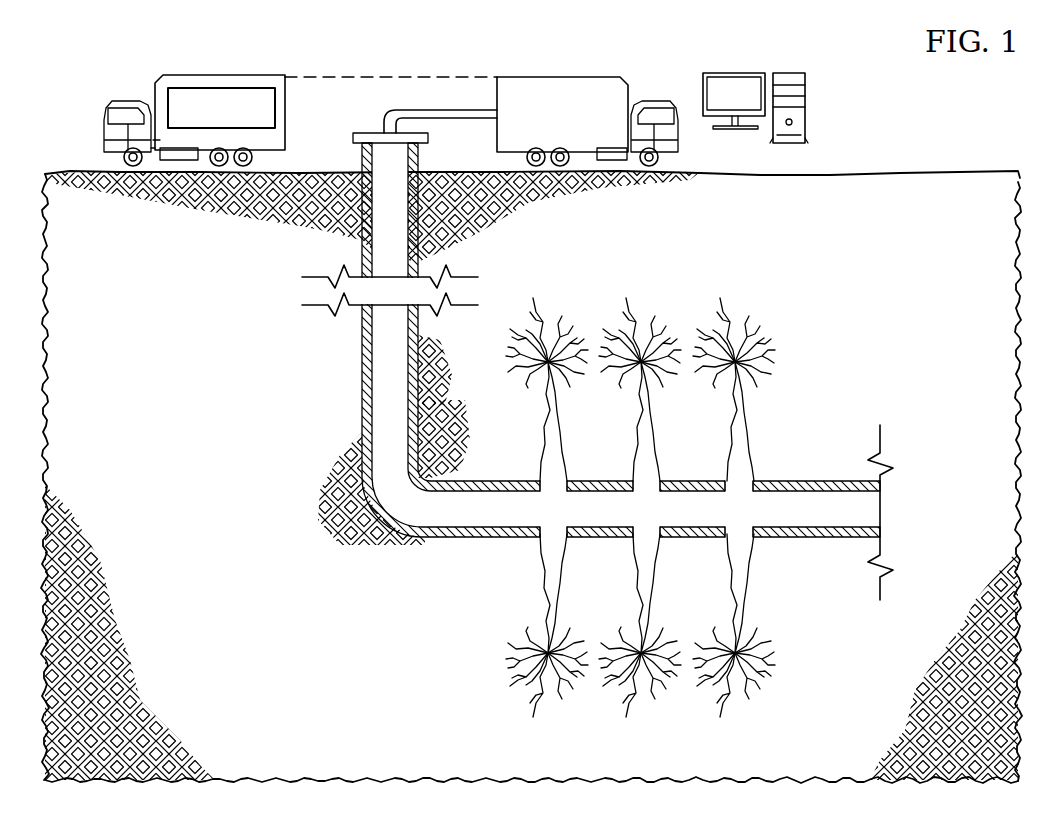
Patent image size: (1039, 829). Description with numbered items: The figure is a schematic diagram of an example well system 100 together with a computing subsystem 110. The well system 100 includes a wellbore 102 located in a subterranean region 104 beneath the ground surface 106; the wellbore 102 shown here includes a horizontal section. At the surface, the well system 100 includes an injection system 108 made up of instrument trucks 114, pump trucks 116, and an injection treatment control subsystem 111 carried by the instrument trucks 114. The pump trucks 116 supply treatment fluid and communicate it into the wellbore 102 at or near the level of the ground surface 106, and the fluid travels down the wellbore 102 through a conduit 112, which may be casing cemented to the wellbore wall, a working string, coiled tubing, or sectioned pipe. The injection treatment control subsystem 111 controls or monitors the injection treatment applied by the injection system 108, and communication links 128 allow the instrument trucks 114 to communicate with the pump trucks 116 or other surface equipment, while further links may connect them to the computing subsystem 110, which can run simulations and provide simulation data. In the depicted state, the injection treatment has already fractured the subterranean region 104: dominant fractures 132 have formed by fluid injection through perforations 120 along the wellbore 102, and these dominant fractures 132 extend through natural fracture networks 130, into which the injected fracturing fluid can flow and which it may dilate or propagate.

The well system 100 is at (244, 581).
The wellbore 102 is at (468, 545).
The subterranean region 104 is at (536, 252).
The ground surface 106 is at (838, 175).
The injection system 108 is at (79, 73).
The computing subsystem 110 is at (776, 65).
The injection treatment control subsystem 111 is at (240, 122).
The conduit 112 is at (362, 390).
The instrument trucks 114 is at (222, 75).
The pump trucks 116 is at (558, 77).
The perforations 120 is at (553, 478).
The communication links 128 is at (378, 76).
The natural fracture networks 130 is at (669, 312).
The dominant fractures 132 is at (552, 404).